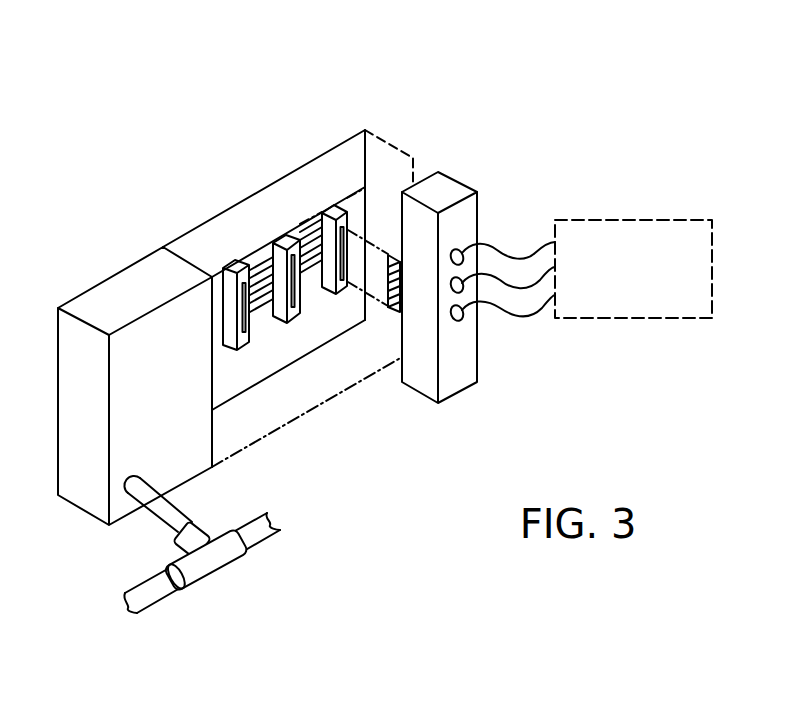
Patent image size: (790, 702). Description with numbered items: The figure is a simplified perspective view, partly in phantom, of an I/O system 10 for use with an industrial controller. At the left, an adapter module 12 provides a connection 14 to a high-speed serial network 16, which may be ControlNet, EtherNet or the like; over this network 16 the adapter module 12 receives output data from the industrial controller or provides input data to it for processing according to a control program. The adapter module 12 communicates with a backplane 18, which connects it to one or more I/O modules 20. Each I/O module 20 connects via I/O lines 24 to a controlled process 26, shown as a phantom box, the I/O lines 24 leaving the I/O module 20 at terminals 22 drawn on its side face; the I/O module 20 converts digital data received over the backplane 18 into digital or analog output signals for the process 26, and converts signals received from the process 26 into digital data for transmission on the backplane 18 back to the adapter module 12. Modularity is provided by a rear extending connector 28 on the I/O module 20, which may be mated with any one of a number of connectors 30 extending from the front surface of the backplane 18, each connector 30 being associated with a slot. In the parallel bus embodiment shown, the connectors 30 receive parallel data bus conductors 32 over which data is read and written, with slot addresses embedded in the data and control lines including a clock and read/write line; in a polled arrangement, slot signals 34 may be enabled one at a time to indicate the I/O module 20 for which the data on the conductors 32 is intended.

The I/O system 10 is at (460, 78).
The adapter module 12 is at (123, 296).
The connection 14 is at (170, 525).
The high-speed serial network 16 is at (167, 600).
The backplane 18 is at (258, 188).
The I/O module 20 is at (440, 190).
The connector contacts 22 is at (462, 311).
The I/O lines 24 is at (498, 280).
The controlled process 26 is at (647, 286).
The rear extending connector 28 is at (393, 312).
The connectors 30 is at (340, 206).
The parallel data bus conductors 32 is at (263, 282).
The slot signals 34 is at (288, 365).